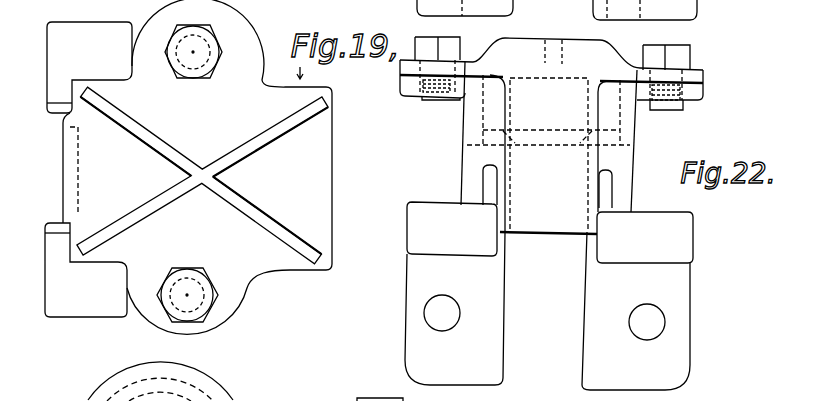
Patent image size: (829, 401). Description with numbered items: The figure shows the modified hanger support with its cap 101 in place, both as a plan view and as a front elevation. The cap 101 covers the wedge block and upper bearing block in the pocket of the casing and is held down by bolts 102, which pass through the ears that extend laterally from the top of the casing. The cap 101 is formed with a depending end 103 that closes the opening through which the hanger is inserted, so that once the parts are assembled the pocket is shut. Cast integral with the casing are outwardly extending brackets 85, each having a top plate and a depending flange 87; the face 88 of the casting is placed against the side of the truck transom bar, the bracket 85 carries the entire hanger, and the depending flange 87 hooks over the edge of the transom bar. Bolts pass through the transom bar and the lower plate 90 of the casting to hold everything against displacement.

In FIG. 19, the outwardly extending brackets 85 is at (55, 50).
In FIG. 19, the cap 101 is at (197, 167).
In FIG. 19, the bolts 102 is at (212, 70).
In FIG. 22, the bolts 102 is at (417, 40).
In FIG. 22, the depending end 103 is at (548, 154).
In FIG. 22, the depending flange 87 is at (418, 243).
In FIG. 22, the face 88 is at (544, 336).
In FIG. 22, the lower plate 90 is at (551, 311).